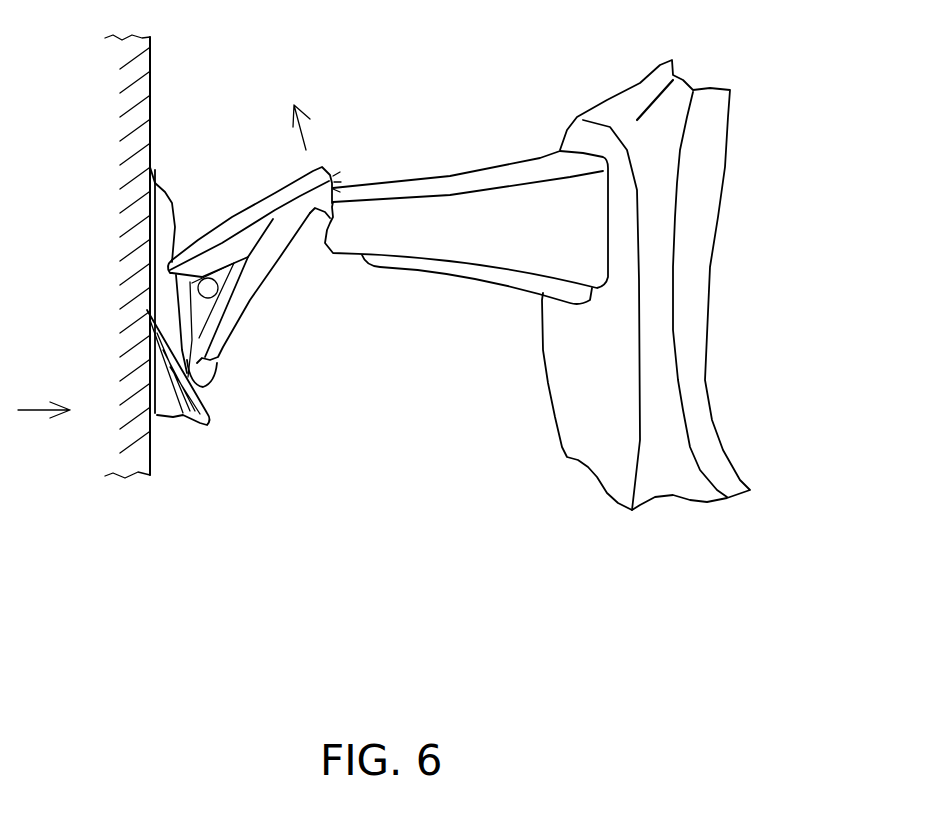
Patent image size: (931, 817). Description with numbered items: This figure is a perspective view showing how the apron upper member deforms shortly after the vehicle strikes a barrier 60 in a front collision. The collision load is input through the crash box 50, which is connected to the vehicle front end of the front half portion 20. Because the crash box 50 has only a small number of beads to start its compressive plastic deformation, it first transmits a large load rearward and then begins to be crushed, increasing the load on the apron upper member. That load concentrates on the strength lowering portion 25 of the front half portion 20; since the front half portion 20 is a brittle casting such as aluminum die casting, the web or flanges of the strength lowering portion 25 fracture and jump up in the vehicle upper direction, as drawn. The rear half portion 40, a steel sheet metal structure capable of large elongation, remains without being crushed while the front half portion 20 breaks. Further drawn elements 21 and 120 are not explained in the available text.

The front half portion 20 is at (253, 300).
The lever arm 21 is at (263, 258).
The strength lowering portion 25 is at (335, 186).
The rear half portion 40 is at (516, 193).
The crash box 50 is at (205, 382).
The barrier 60 is at (147, 467).
The vehicle body part 120 is at (662, 203).